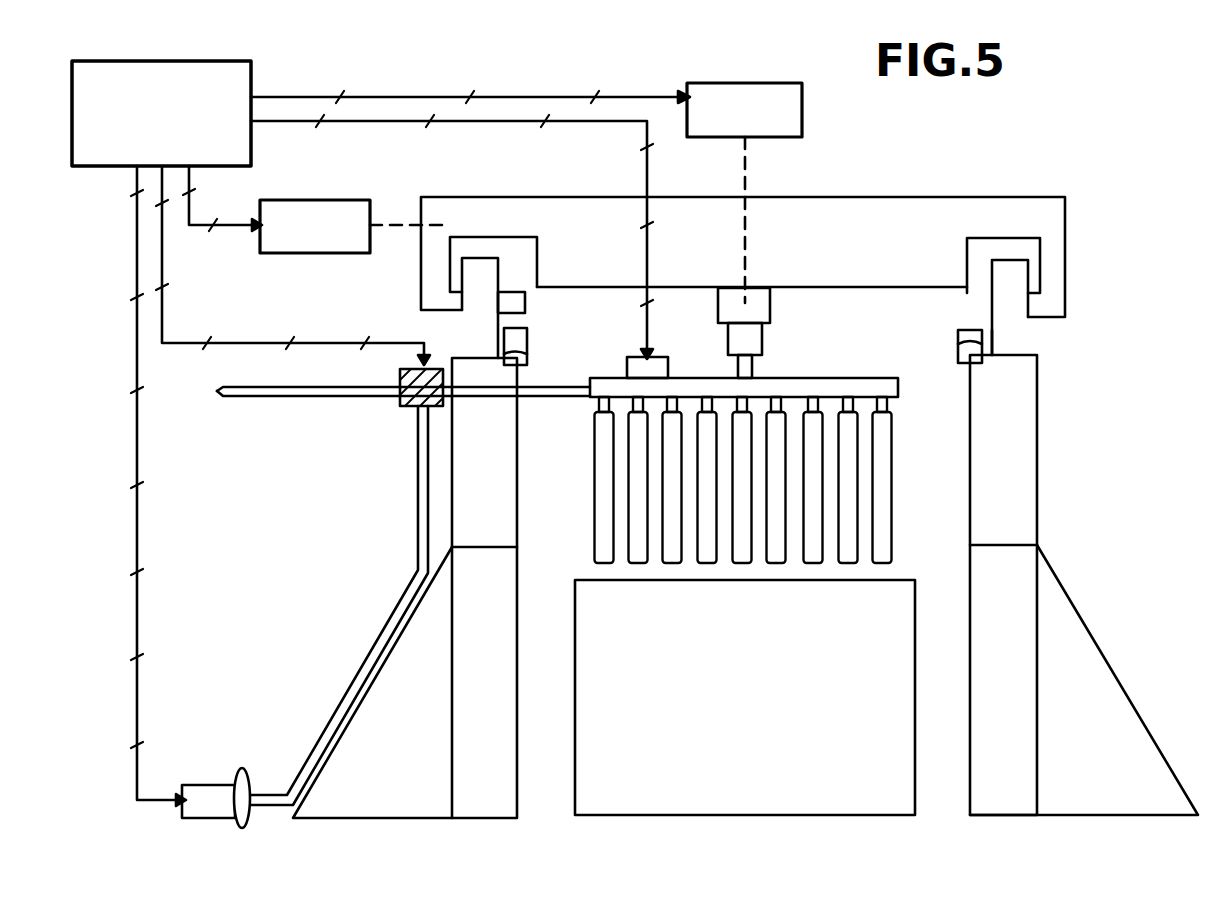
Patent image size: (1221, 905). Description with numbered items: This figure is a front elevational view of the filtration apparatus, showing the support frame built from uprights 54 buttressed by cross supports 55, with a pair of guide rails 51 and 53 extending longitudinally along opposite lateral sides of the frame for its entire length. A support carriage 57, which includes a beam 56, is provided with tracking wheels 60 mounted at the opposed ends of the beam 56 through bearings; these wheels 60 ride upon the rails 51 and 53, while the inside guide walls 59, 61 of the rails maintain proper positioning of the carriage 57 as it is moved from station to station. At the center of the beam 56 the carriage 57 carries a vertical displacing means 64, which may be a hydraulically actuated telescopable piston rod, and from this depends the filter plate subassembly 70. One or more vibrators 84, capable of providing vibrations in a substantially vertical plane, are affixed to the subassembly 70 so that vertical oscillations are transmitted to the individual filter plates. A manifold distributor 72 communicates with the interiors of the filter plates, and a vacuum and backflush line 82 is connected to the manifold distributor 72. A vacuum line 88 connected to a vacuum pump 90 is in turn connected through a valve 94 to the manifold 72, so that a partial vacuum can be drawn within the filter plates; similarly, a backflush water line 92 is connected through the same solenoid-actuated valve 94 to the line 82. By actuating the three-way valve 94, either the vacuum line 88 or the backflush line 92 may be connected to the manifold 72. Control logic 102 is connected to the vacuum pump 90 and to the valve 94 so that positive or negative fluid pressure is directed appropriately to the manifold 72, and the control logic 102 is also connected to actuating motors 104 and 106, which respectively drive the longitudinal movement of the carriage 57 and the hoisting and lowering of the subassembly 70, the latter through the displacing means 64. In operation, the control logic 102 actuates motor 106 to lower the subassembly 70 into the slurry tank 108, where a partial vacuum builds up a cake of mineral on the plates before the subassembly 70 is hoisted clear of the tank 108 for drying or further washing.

The control logic 102 is at (158, 58).
The actuating motor 104 is at (310, 255).
The actuating motor 106 is at (700, 82).
The support carriage 57 is at (512, 187).
The beam 56 is at (1057, 215).
The tracking wheels 60 is at (470, 328).
The inside guide wall 59 is at (505, 333).
The guide rail 51 is at (527, 355).
The inside guide wall 61 is at (962, 338).
The guide rail 53 is at (1018, 350).
The vibrator 84 is at (628, 358).
The vertical displacing means 64 is at (771, 313).
The manifold distributor 72 is at (826, 379).
The filter plate subassembly 70 is at (912, 408).
The slurry tank 108 is at (652, 802).
The backflush water line 92 is at (290, 401).
The three-way solenoid valve 94 is at (401, 410).
The vacuum and backflush line 82 is at (573, 399).
The vacuum line 88 is at (416, 501).
The vacuum pump 90 is at (202, 818).
The cross supports 55 is at (360, 805).
The uprights 54 is at (493, 802).